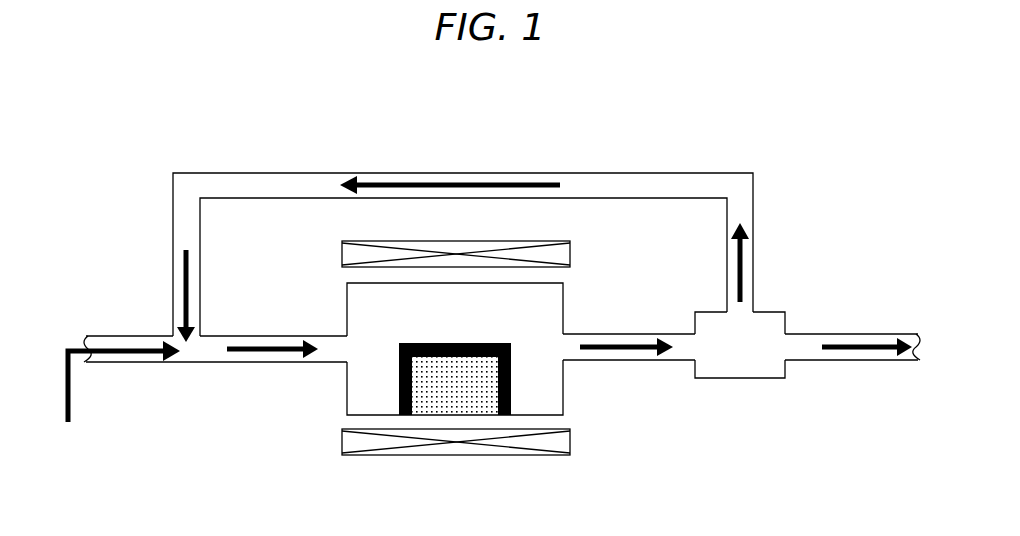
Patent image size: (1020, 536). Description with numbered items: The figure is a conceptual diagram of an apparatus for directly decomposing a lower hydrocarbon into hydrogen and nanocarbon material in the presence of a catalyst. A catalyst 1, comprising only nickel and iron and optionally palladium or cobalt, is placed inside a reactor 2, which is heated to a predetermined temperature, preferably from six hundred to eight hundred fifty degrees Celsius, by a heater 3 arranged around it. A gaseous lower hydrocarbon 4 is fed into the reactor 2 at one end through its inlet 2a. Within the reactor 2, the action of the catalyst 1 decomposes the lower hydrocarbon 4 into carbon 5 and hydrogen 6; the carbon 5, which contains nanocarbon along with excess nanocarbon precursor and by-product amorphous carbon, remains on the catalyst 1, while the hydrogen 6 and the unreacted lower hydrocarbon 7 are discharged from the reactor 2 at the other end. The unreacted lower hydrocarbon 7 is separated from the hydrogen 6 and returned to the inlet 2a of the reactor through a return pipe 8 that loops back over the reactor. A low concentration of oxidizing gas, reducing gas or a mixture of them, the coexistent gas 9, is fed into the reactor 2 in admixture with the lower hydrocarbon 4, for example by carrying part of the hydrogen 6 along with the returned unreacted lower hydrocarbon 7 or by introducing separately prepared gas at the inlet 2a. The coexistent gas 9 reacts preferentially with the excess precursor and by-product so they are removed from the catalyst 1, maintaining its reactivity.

The catalyst 1 is at (478, 389).
The reactor 2 is at (565, 313).
The inlet 2a is at (195, 352).
The heater 3 is at (571, 251).
The lower hydrocarbon 4 is at (110, 346).
The carbon 5 is at (412, 343).
The hydrogen 6 is at (862, 340).
The unreacted lower hydrocarbon 7 is at (745, 267).
The return pipe 8 is at (641, 172).
The coexistent gas 9 is at (275, 350).